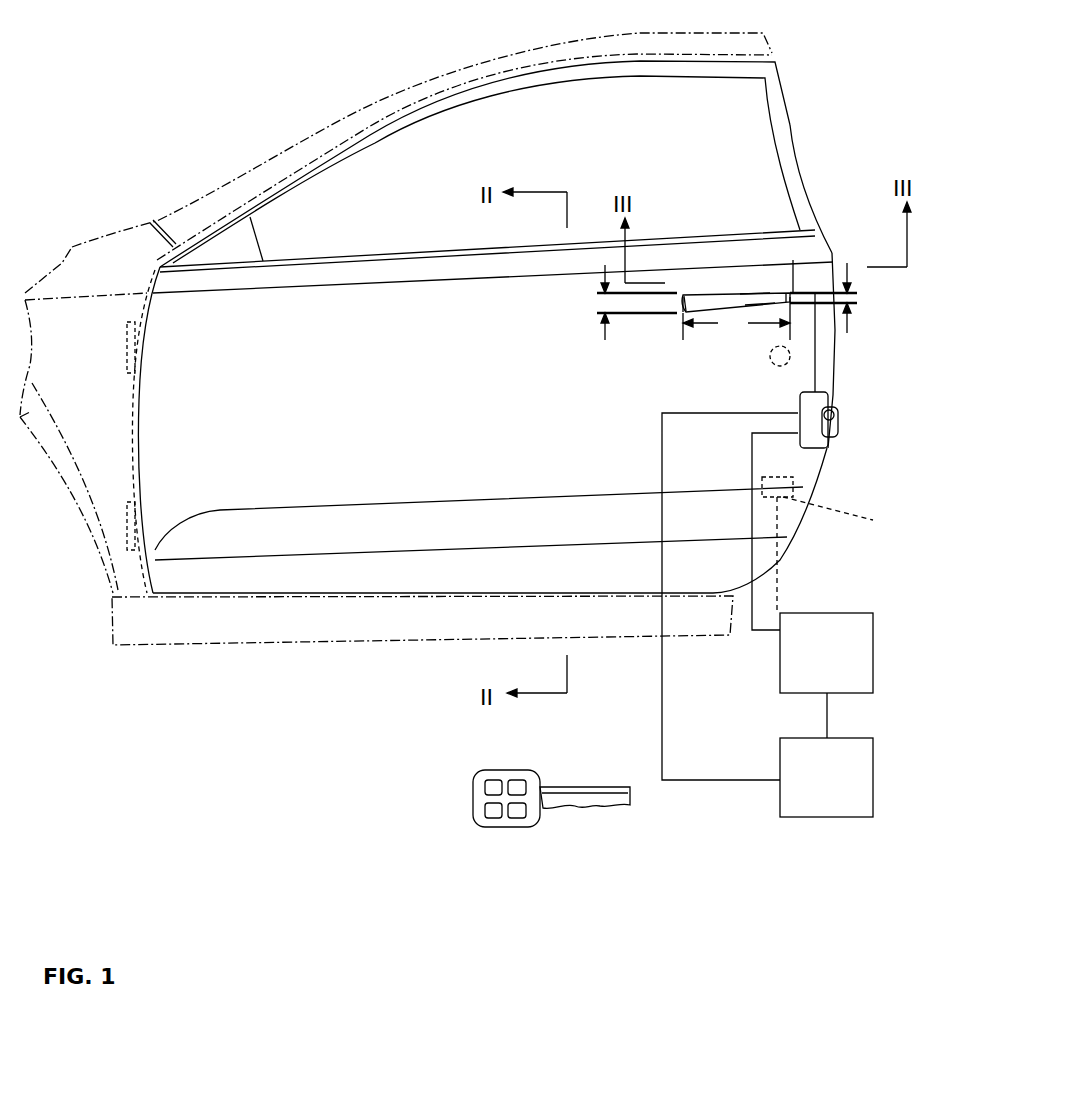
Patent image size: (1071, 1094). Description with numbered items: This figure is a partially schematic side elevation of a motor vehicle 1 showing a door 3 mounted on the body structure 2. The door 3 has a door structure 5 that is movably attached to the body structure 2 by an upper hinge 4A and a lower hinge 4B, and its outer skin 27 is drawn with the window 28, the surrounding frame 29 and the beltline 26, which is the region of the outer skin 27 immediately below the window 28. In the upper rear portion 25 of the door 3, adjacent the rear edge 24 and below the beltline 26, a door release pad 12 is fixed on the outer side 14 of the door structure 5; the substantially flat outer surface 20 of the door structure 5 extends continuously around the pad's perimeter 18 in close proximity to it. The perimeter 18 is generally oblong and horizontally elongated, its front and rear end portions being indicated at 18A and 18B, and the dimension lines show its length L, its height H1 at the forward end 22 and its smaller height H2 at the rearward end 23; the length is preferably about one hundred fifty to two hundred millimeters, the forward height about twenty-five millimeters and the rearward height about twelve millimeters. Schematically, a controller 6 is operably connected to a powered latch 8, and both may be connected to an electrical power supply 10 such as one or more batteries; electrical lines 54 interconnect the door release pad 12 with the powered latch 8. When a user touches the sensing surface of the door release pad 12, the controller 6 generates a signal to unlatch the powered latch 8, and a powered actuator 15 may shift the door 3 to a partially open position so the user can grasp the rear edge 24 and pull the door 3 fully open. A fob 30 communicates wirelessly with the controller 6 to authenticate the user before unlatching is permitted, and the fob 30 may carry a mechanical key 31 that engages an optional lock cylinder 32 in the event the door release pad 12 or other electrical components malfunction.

The motor vehicle 1 is at (813, 73).
The body structure 2 is at (217, 642).
The door 3 is at (814, 155).
The hinge 4A is at (127, 332).
The hinge 4B is at (133, 530).
The door structure 5 is at (834, 338).
The controller 6 is at (875, 674).
The powered latch 8 is at (843, 393).
The electrical power supply 10 is at (873, 780).
The door release pad 12 is at (756, 303).
The outer side 14 is at (797, 479).
The powered actuator 15 is at (841, 555).
The perimeter 18 is at (745, 303).
The molding front end 18A is at (703, 311).
The molding rear end 18B is at (713, 293).
The flat outer surface 20 is at (753, 297).
The forward end 22 is at (683, 311).
The rearward end 23 is at (793, 262).
The rear edge 24 is at (825, 449).
The upper rear portion 25 is at (720, 296).
The beltline 26 is at (833, 253).
The outer skin 27 is at (787, 523).
The window 28 is at (447, 184).
The frame 29 is at (780, 73).
The fob 30 is at (488, 830).
The key 31 is at (578, 806).
The lock cylinder 32 is at (790, 356).
The electrical lines 54 is at (830, 375).
The height at forward end H1 is at (605, 323).
The height at rearward end H2 is at (848, 323).
The length L is at (736, 318).